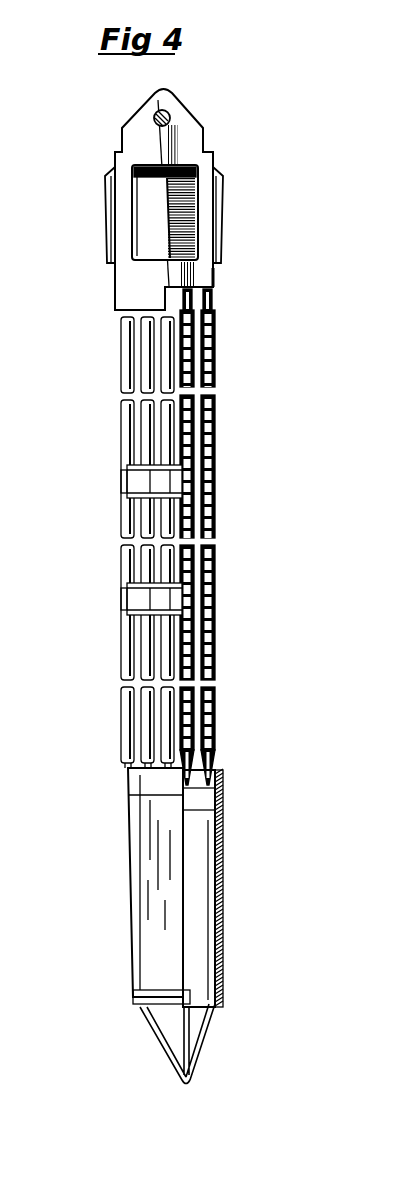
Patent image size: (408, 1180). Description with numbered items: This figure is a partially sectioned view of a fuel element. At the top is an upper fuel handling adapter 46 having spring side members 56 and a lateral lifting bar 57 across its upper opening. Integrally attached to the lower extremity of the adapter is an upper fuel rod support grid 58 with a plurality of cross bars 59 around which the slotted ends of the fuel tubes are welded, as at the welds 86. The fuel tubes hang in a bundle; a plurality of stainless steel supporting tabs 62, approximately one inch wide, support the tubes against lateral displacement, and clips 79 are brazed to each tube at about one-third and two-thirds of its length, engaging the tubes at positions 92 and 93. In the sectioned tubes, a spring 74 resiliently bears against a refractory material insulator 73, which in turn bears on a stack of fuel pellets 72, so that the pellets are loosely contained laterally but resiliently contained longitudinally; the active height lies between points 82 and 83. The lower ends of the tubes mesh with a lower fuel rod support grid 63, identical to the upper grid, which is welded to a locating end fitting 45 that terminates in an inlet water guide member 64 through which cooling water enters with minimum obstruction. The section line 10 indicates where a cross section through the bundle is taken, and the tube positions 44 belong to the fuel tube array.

The section line 10- 10 is at (122, 571).
The guide tubes 44 is at (115, 539).
The locating end fitting 45 is at (218, 922).
The upper fuel handling adapter 46 is at (215, 268).
The spring side members 56 is at (222, 188).
The lateral lifting bar 57 is at (171, 110).
The upper fuel rod support grid 58 is at (215, 284).
The cross bars 59 is at (212, 302).
The supporting tabs 62 is at (135, 467).
The lower fuel rod support grid 63 is at (205, 782).
The inlet water guide member 64 is at (200, 1062).
The fuel pellets 72 is at (215, 494).
The refractory material insulator 73 is at (214, 746).
The spring 74 is at (212, 336).
The clips 79 is at (218, 472).
The upper point of active height 82 is at (228, 343).
The lower point of active height 83 is at (230, 746).
The weld 86 is at (215, 812).
The clip engagement position 92 is at (114, 483).
The clip engagement position 93 is at (115, 608).